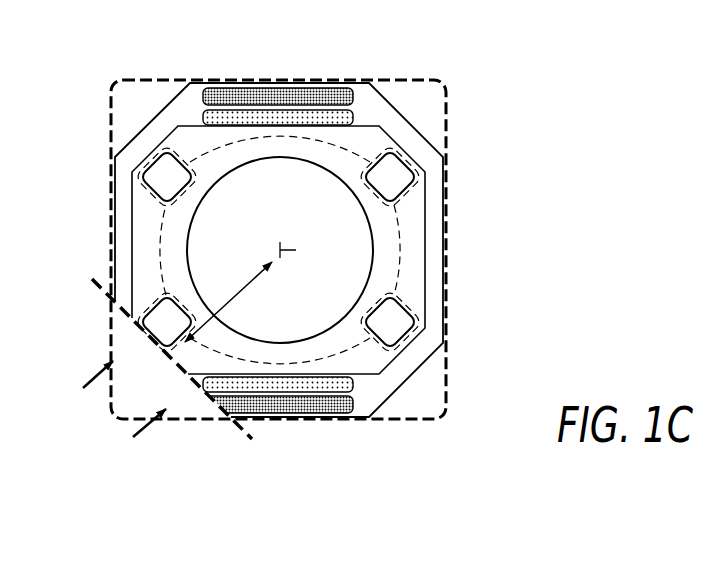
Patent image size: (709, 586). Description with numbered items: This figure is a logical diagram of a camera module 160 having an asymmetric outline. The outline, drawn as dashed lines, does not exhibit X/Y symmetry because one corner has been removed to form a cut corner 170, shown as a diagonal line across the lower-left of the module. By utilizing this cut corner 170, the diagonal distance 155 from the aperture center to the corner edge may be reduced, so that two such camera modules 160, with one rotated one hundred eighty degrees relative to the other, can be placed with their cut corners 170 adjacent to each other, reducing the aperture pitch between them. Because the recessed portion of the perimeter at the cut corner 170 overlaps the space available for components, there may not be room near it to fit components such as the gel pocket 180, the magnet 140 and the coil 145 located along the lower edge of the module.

The magnet 140 is at (324, 93).
The coil 145 is at (250, 114).
The diagonal distance 155 is at (251, 296).
The camera module 160 is at (478, 139).
The cut corner 170 is at (144, 347).
The gel pocket 180 is at (160, 318).